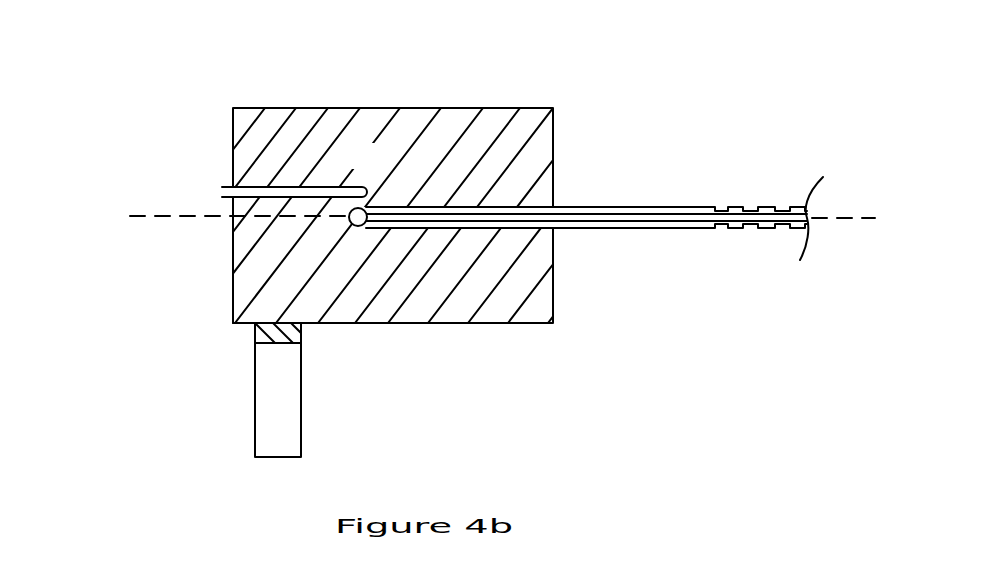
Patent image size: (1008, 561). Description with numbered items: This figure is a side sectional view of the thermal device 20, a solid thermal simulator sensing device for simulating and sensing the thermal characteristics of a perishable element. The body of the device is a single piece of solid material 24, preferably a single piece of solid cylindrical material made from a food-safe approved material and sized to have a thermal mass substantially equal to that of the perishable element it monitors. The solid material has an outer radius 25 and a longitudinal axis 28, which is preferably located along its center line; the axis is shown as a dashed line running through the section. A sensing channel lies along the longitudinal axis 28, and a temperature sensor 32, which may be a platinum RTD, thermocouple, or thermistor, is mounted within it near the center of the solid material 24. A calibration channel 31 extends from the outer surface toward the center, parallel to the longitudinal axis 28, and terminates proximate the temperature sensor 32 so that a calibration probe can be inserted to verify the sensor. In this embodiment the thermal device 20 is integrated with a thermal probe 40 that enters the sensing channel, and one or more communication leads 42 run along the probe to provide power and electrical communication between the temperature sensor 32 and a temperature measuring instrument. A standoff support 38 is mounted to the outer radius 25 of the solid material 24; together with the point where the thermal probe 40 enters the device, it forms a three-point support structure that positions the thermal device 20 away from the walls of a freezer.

The thermal device 20 is at (590, 96).
The single piece of solid material 24 is at (352, 166).
The outer radius 25 is at (235, 215).
The longitudinal axis 28 is at (152, 217).
The calibration channel 31 is at (232, 187).
The temperature sensor 32 is at (358, 225).
The standoff support 38 is at (318, 380).
The thermal probe 40 is at (650, 206).
The communication leads 42 is at (622, 219).